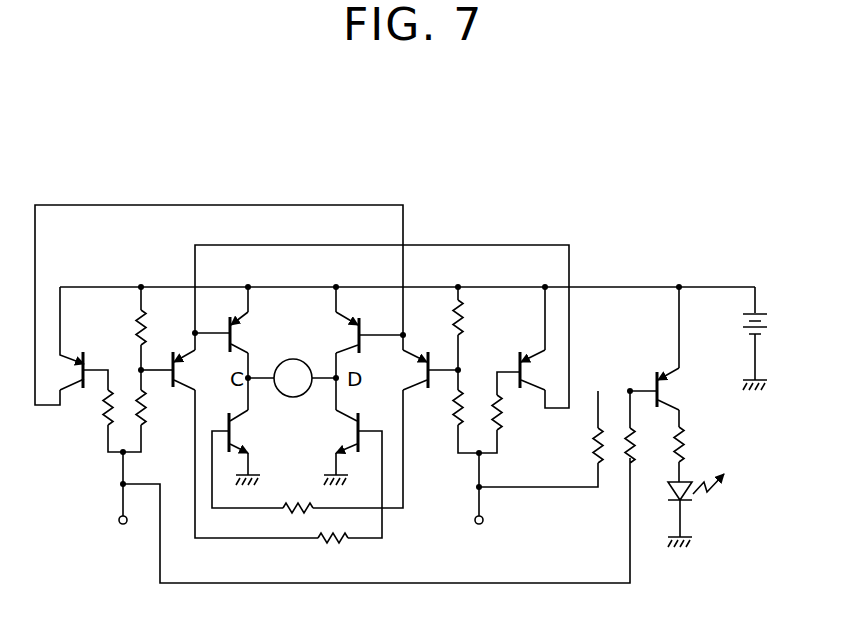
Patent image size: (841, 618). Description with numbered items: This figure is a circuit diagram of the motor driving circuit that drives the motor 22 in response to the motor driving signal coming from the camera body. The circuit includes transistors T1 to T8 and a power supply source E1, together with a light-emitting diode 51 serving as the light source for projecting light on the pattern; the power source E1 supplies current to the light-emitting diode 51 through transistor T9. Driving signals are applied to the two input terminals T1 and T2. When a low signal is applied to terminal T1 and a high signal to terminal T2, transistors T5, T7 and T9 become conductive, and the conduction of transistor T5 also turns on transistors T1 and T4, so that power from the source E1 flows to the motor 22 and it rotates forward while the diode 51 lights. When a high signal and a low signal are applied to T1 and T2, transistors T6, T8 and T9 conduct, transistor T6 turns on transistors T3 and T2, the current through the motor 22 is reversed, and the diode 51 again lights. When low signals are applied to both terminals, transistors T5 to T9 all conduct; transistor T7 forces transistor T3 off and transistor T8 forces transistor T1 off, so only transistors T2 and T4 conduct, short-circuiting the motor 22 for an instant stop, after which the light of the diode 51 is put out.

The transistor T1 / terminal T1 is at (238, 336).
The transistor T2 / terminal T2 is at (236, 431).
The transistor T3 is at (354, 338).
The transistor T4 is at (352, 438).
The transistor T5 is at (183, 372).
The transistor T6 is at (426, 374).
The transistor T7 is at (85, 362).
The transistor T8 is at (522, 364).
The transistor T9 is at (664, 392).
The motor 22 is at (293, 358).
The light-emitting diode 51 is at (694, 500).
The power supply source E1 is at (741, 325).